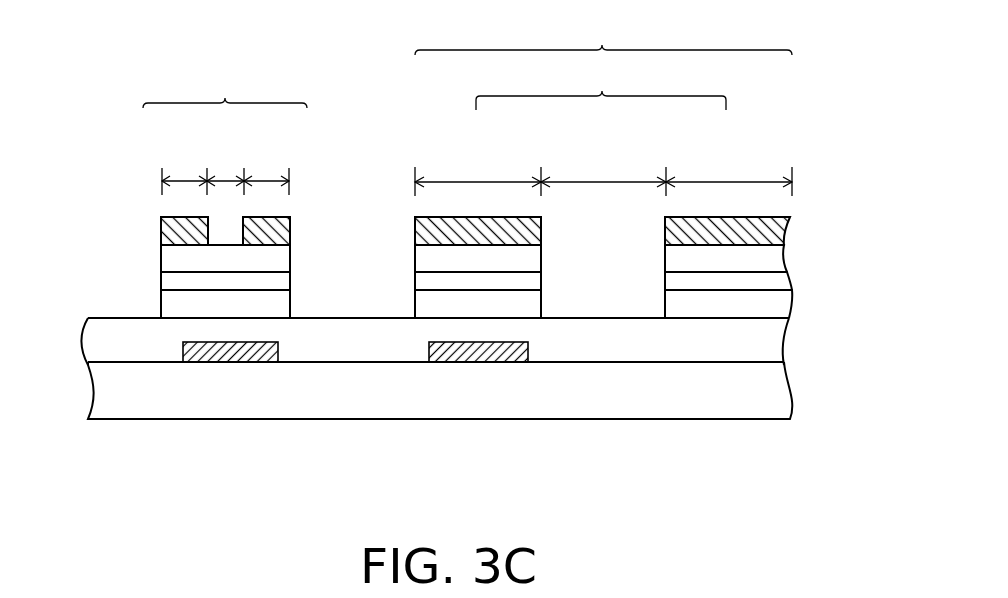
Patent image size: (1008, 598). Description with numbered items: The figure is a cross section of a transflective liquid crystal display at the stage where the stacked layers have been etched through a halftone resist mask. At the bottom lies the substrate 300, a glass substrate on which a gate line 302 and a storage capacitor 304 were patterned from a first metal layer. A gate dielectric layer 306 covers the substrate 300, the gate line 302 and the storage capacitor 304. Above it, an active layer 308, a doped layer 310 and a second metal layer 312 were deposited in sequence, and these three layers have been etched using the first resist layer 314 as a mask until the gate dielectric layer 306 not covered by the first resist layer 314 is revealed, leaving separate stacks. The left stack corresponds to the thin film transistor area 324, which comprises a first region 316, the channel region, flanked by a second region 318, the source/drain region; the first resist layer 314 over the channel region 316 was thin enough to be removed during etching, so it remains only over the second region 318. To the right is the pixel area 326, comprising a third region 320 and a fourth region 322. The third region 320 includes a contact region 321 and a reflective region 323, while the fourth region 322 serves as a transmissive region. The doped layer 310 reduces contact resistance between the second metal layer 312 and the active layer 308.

The substrate 300 is at (767, 392).
The gate line 302 is at (235, 350).
The storage capacitor 304 is at (484, 350).
The gate dielectric layer 306 is at (767, 340).
The active layer 308 is at (175, 306).
The doped layer 310 is at (175, 280).
The second metal layer 312 is at (175, 257).
The first resist layer 314 is at (160, 226).
The first region 316 is at (225, 178).
The second region 318 is at (183, 178).
The third region 320 is at (601, 84).
The contact region 321 is at (478, 180).
The fourth region 322 is at (604, 180).
The reflective region 323 is at (728, 180).
The thin film transistor area 324 is at (225, 87).
The pixel area 326 is at (603, 32).